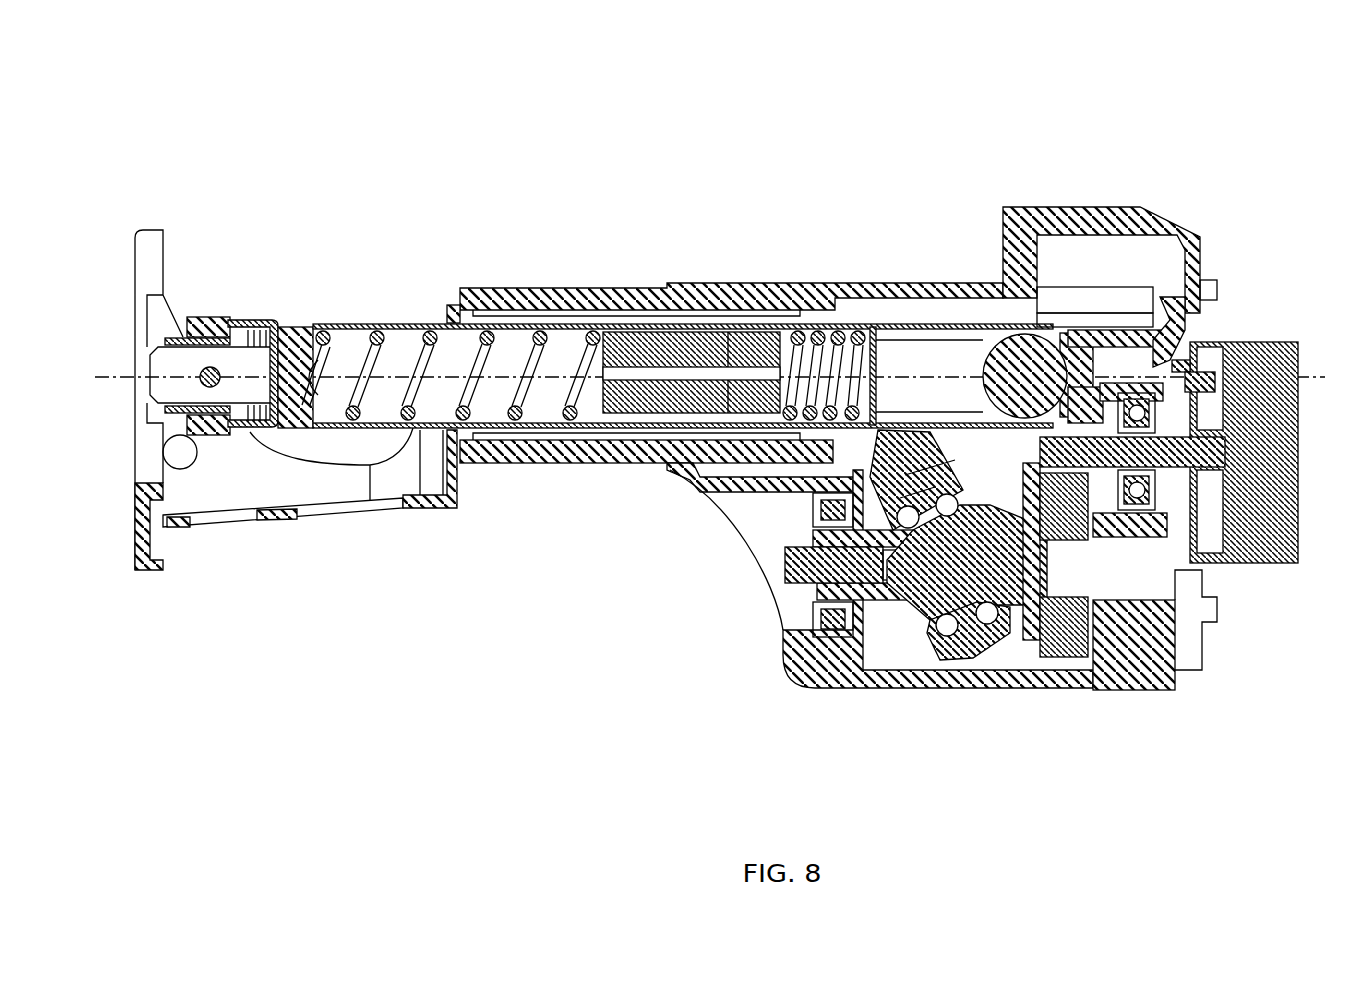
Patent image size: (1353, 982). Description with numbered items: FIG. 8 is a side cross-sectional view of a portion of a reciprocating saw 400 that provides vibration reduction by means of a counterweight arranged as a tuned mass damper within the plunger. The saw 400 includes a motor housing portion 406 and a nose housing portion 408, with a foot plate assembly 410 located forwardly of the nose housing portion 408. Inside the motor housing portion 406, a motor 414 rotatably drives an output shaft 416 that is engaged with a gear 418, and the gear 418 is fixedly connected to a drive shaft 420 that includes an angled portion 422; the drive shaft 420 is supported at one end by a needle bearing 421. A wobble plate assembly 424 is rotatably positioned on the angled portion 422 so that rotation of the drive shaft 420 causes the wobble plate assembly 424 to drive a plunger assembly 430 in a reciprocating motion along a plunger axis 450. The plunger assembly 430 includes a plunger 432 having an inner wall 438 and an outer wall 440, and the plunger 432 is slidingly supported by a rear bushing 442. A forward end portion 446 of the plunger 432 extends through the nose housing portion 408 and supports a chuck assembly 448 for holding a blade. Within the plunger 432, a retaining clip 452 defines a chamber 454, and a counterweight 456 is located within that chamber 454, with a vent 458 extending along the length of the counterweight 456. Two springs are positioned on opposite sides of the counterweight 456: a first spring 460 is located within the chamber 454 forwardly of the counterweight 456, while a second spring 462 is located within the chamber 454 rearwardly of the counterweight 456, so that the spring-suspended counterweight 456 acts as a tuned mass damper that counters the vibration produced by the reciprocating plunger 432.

The reciprocating saw 400 is at (810, 115).
The motor housing portion 406 is at (1177, 220).
The nose housing portion 408 is at (485, 288).
The foot plate assembly 410 is at (168, 266).
The motor 414 is at (1273, 340).
The output shaft 416 is at (1080, 430).
The gear 418 is at (1063, 660).
The drive shaft 420 is at (1177, 647).
The needle bearing 421 is at (1157, 597).
The angled portion 422 is at (913, 617).
The wobble plate assembly 424 is at (1010, 640).
The plunger assembly 430 is at (643, 243).
The plunger 432 is at (693, 332).
The inner wall 438 is at (403, 333).
The outer wall 440 is at (323, 333).
The rear bushing 442 is at (1017, 333).
The forward end portion 446 is at (298, 323).
The chuck assembly 448 is at (257, 320).
The plunger axis 450 is at (127, 390).
The retaining clip 452 is at (883, 350).
The chamber 454 is at (453, 340).
The counterweight 456 is at (667, 428).
The vent 458 is at (640, 373).
The first spring 460 is at (567, 394).
The second spring 462 is at (803, 370).